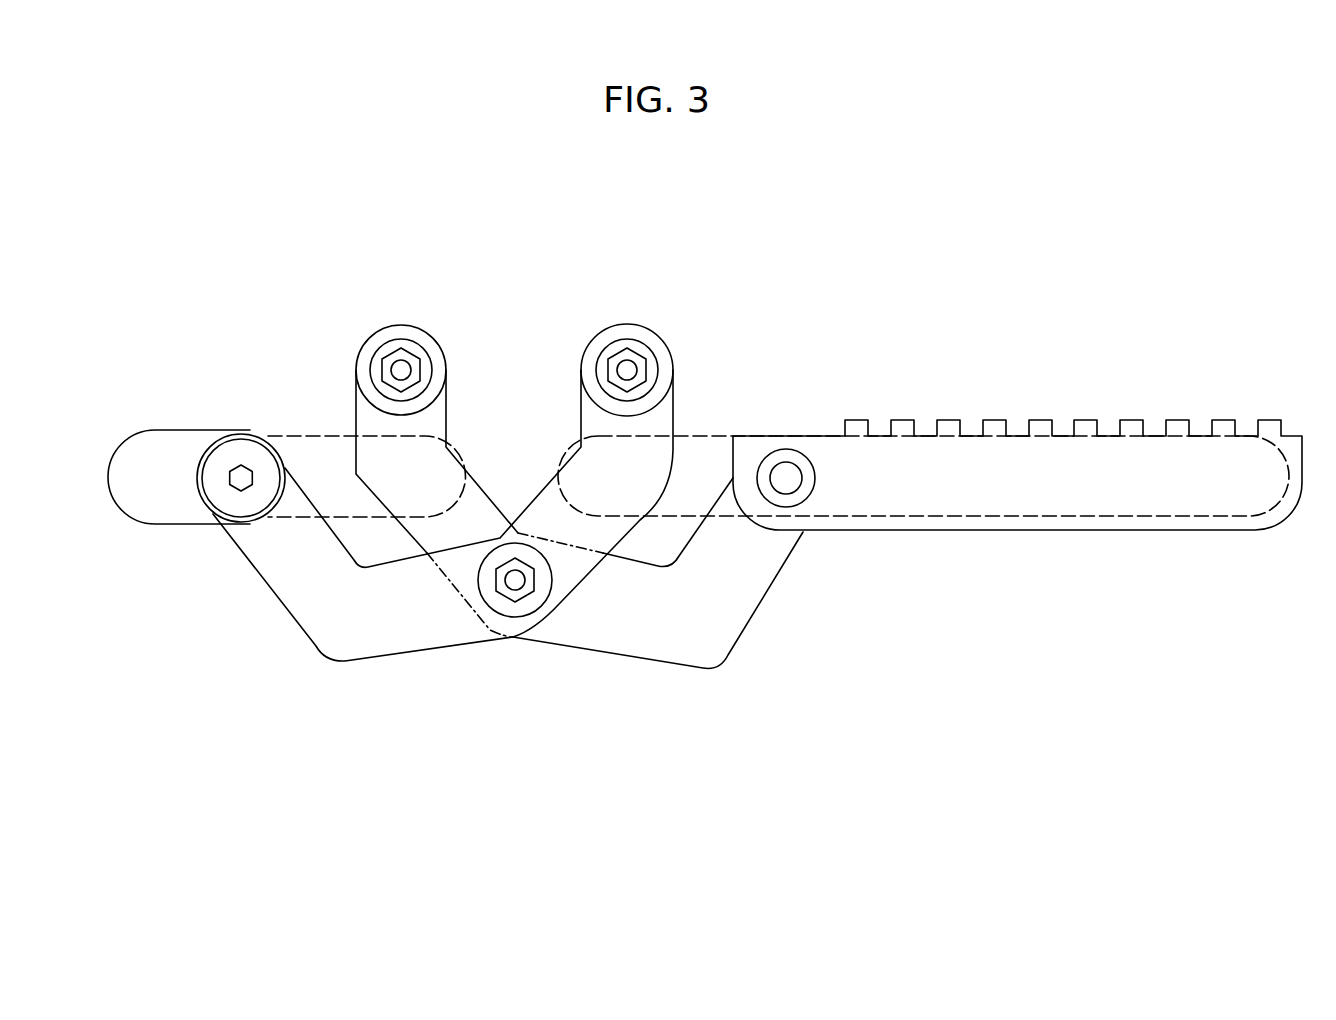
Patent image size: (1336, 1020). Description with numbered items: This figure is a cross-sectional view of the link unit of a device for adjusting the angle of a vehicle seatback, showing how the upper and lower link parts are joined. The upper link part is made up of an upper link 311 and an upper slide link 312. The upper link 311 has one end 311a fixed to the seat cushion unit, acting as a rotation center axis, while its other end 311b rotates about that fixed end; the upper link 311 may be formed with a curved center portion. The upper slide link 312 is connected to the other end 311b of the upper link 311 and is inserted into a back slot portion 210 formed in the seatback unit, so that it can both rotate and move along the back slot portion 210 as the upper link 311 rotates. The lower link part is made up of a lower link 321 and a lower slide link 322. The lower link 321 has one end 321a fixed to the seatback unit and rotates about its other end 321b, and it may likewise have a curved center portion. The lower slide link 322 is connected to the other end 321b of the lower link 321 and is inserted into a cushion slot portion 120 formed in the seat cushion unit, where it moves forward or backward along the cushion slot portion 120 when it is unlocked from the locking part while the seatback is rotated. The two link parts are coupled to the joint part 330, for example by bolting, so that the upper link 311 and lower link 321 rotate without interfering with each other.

The cushion slot portion 120 is at (682, 476).
The back slot portion 210 is at (350, 478).
The upper link 311 is at (390, 627).
The one end of the upper link 311a is at (624, 362).
The other end of the upper link 311b is at (234, 497).
The upper slide link 312 is at (144, 456).
The lower link 321 is at (715, 605).
The one end of the lower link 321a is at (398, 358).
The other end of the lower link 321b is at (790, 473).
The lower slide link 322 is at (1171, 463).
The joint part 330 is at (530, 603).